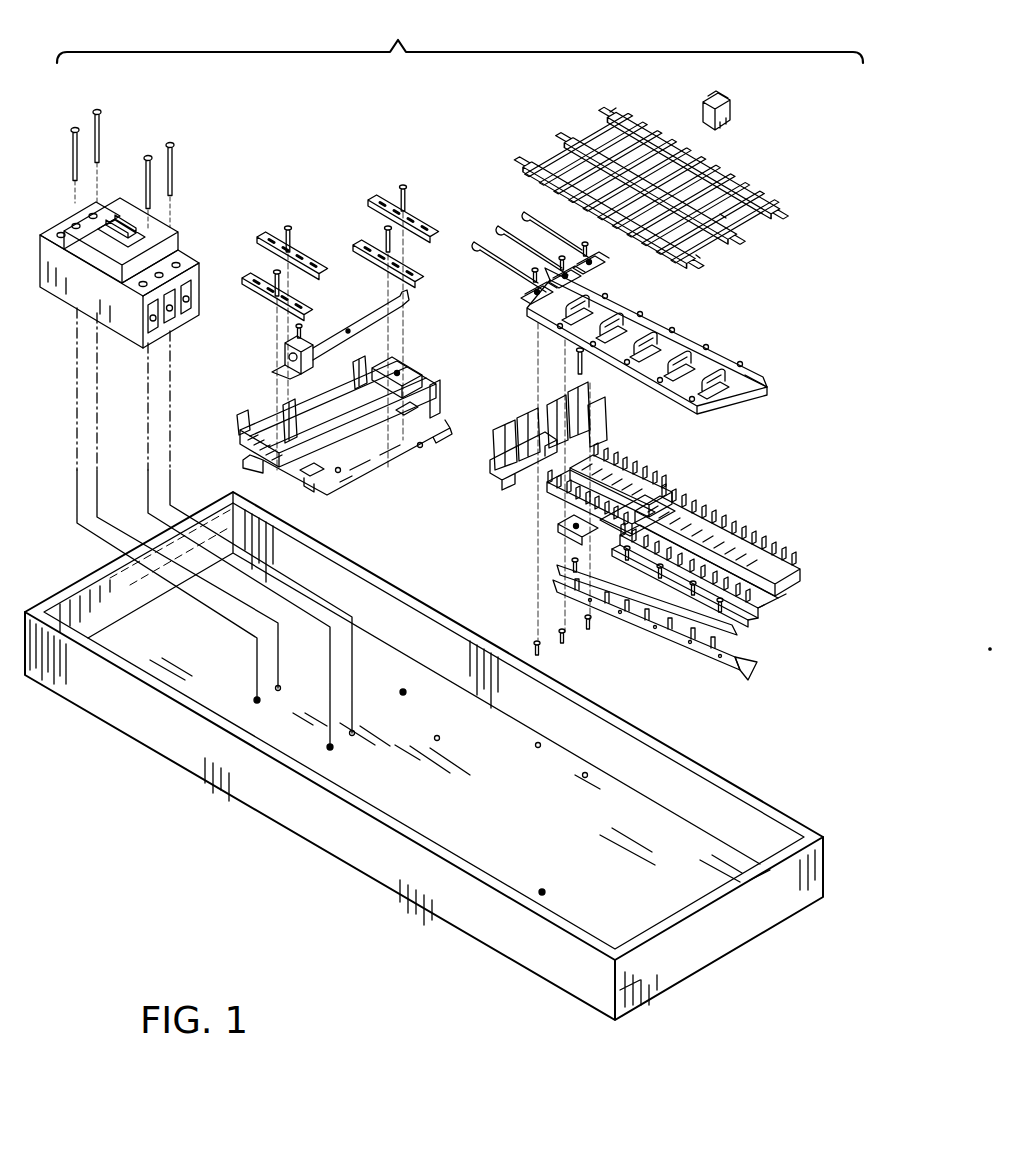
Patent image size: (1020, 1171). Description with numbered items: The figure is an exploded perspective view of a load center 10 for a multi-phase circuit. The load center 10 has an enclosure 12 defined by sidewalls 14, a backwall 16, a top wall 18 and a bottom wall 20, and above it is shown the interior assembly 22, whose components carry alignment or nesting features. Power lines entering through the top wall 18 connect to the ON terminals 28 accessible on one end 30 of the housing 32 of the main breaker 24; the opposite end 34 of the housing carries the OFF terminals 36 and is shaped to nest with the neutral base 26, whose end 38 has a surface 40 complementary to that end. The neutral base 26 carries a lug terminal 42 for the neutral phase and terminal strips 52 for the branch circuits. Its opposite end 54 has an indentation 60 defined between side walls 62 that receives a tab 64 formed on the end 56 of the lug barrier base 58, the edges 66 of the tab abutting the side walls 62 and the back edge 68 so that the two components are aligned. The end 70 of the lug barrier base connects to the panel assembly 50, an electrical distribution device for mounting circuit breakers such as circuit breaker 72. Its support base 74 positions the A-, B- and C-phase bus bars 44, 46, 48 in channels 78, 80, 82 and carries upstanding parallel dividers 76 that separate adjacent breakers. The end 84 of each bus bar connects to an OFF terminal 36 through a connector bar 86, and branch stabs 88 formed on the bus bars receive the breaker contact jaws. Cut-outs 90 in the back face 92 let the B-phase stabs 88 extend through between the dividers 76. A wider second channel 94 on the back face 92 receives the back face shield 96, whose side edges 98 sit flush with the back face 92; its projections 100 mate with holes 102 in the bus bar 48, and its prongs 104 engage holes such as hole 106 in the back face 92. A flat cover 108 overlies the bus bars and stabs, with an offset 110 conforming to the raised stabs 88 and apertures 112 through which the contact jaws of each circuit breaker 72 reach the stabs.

The load center 10 is at (443, 793).
The enclosure 12 is at (357, 765).
The sidewalls 14 is at (213, 765).
The backwall 16 is at (490, 852).
The top wall 18 is at (127, 588).
The bottom wall 20 is at (685, 953).
The interior assembly 22 is at (460, 36).
The main breaker 24 is at (175, 200).
The neutral base 26 is at (240, 418).
The ON terminals 28 is at (100, 207).
The end 30 is at (62, 218).
The housing 32 is at (128, 220).
The opposite end 34 is at (200, 267).
The OFF terminals 36 is at (127, 313).
The end 38 is at (263, 410).
The surface 40 is at (320, 410).
The lug terminal 42 is at (307, 337).
The bus bar 44 is at (697, 407).
The bus bar 46 is at (767, 377).
The bus bar 48 is at (563, 525).
The panel assembly 50 is at (742, 567).
The terminal strips 52 is at (362, 225).
The opposite end 54 is at (343, 473).
The end 56 is at (490, 460).
The lug barrier base 58 is at (500, 487).
The indentation 60 is at (371, 455).
The side walls 62 is at (405, 440).
The tab 64 is at (513, 439).
The edges 66 is at (531, 415).
The back edge 68 is at (380, 443).
The end 70 is at (593, 460).
The circuit breaker 72 is at (723, 107).
The support base 74 is at (713, 500).
The dividers 76 is at (765, 598).
The channel 78 is at (747, 607).
The channel 80 is at (807, 567).
The channel 82 is at (780, 582).
The end 84 is at (603, 280).
The connector bar 86 is at (527, 207).
The branch stabs 88 is at (737, 397).
The cut-outs 90 is at (670, 513).
The back face 92 is at (748, 611).
The second channel 94 is at (587, 547).
The back face shield 96 is at (552, 577).
The side edges 98 is at (723, 687).
The projections 100 is at (740, 673).
The holes 102 is at (730, 633).
The prongs 104 is at (675, 653).
The hole 106 is at (757, 187).
The cover 108 is at (607, 123).
The offset 110 is at (717, 243).
The apertures 112 is at (723, 217).